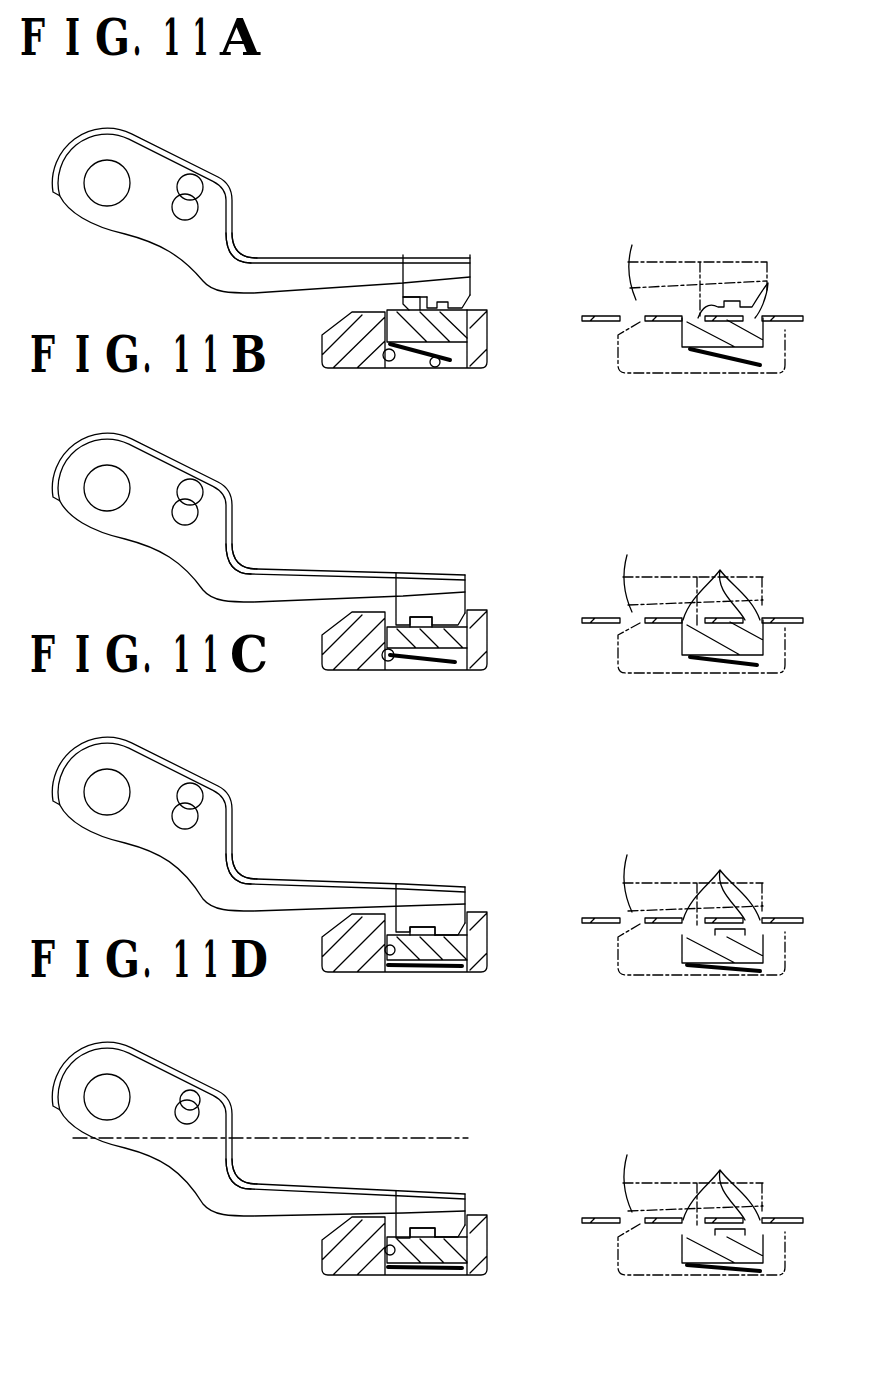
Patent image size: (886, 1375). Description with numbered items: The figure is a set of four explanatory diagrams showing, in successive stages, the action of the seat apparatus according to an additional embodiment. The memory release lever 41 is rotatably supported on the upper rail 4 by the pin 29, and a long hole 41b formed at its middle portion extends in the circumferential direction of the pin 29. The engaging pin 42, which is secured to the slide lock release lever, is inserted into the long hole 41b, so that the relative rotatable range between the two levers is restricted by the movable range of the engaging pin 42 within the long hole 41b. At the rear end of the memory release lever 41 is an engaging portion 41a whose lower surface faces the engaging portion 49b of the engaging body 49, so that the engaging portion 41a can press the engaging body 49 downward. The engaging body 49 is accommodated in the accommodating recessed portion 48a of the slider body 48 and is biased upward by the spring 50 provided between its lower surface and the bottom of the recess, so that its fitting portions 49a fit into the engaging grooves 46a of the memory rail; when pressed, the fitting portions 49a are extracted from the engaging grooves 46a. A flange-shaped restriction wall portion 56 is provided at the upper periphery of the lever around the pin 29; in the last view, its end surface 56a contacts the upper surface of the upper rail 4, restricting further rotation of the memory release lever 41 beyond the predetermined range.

In FIG. 11D, the upper rail 4 is at (280, 1119).
In FIG. 11A, the pin 29 is at (84, 198).
In FIG. 11B, the pin 29 is at (77, 500).
In FIG. 11C, the pin 29 is at (77, 804).
In FIG. 11D, the pin 29 is at (77, 1109).
In FIG. 11A, the memory release lever 41 is at (190, 163).
In FIG. 11B, the memory release lever 41 is at (262, 520).
In FIG. 11C, the memory release lever 41 is at (262, 827).
In FIG. 11D, the memory release lever 41 is at (262, 1130).
In FIG. 11A, the engaging portion 41a is at (467, 303).
In FIG. 11B, the engaging portion 41a is at (487, 605).
In FIG. 11C, the engaging portion 41a is at (489, 911).
In FIG. 11D, the engaging portion 41a is at (489, 1212).
In FIG. 11A, the long hole 41b is at (198, 210).
In FIG. 11B, the long hole 41b is at (231, 512).
In FIG. 11C, the long hole 41b is at (231, 816).
In FIG. 11D, the long hole 41b is at (212, 1072).
In FIG. 11A, the engaging pin 42 is at (202, 185).
In FIG. 11B, the engaging pin 42 is at (221, 480).
In FIG. 11C, the engaging pin 42 is at (221, 784).
In FIG. 11D, the engaging pin 42 is at (220, 1097).
In FIG. 11A, the engaging grooves 46a is at (683, 331).
In FIG. 11B, the engaging grooves 46a is at (712, 643).
In FIG. 11C, the engaging grooves 46a is at (712, 943).
In FIG. 11D, the engaging grooves 46a is at (712, 1243).
In FIG. 11A, the slider body 48 is at (352, 375).
In FIG. 11B, the slider body 48 is at (553, 679).
In FIG. 11C, the slider body 48 is at (553, 980).
In FIG. 11D, the slider body 48 is at (553, 1281).
In FIG. 11A, the accommodating recessed portion 48a is at (389, 370).
In FIG. 11B, the accommodating recessed portion 48a is at (392, 680).
In FIG. 11C, the accommodating recessed portion 48a is at (392, 979).
In FIG. 11D, the accommodating recessed portion 48a is at (392, 1280).
In FIG. 11A, the engaging body 49 is at (458, 330).
In FIG. 11B, the engaging body 49 is at (614, 646).
In FIG. 11C, the engaging body 49 is at (614, 948).
In FIG. 11D, the engaging body 49 is at (614, 1250).
In FIG. 11A, the fitting portions 49a is at (768, 283).
In FIG. 11B, the fitting portions 49a is at (721, 579).
In FIG. 11C, the fitting portions 49a is at (721, 880).
In FIG. 11D, the fitting portions 49a is at (721, 1180).
In FIG. 11A, the engaging portion 49b is at (400, 301).
In FIG. 11B, the engaging portion 49b is at (420, 581).
In FIG. 11C, the engaging portion 49b is at (420, 889).
In FIG. 11D, the engaging portion 49b is at (420, 1191).
In FIG. 11A, the spring 50 is at (437, 370).
In FIG. 11B, the spring 50 is at (573, 685).
In FIG. 11C, the spring 50 is at (574, 990).
In FIG. 11D, the spring 50 is at (574, 1290).
In FIG. 11A, the restriction wall portion 56 is at (136, 137).
In FIG. 11B, the restriction wall portion 56 is at (258, 484).
In FIG. 11C, the restriction wall portion 56 is at (258, 792).
In FIG. 11D, the restriction wall portion 56 is at (258, 1097).
In FIG. 11A, the end surface 56a is at (234, 228).
In FIG. 11B, the end surface 56a is at (273, 550).
In FIG. 11C, the end surface 56a is at (273, 858).
In FIG. 11D, the end surface 56a is at (270, 1163).